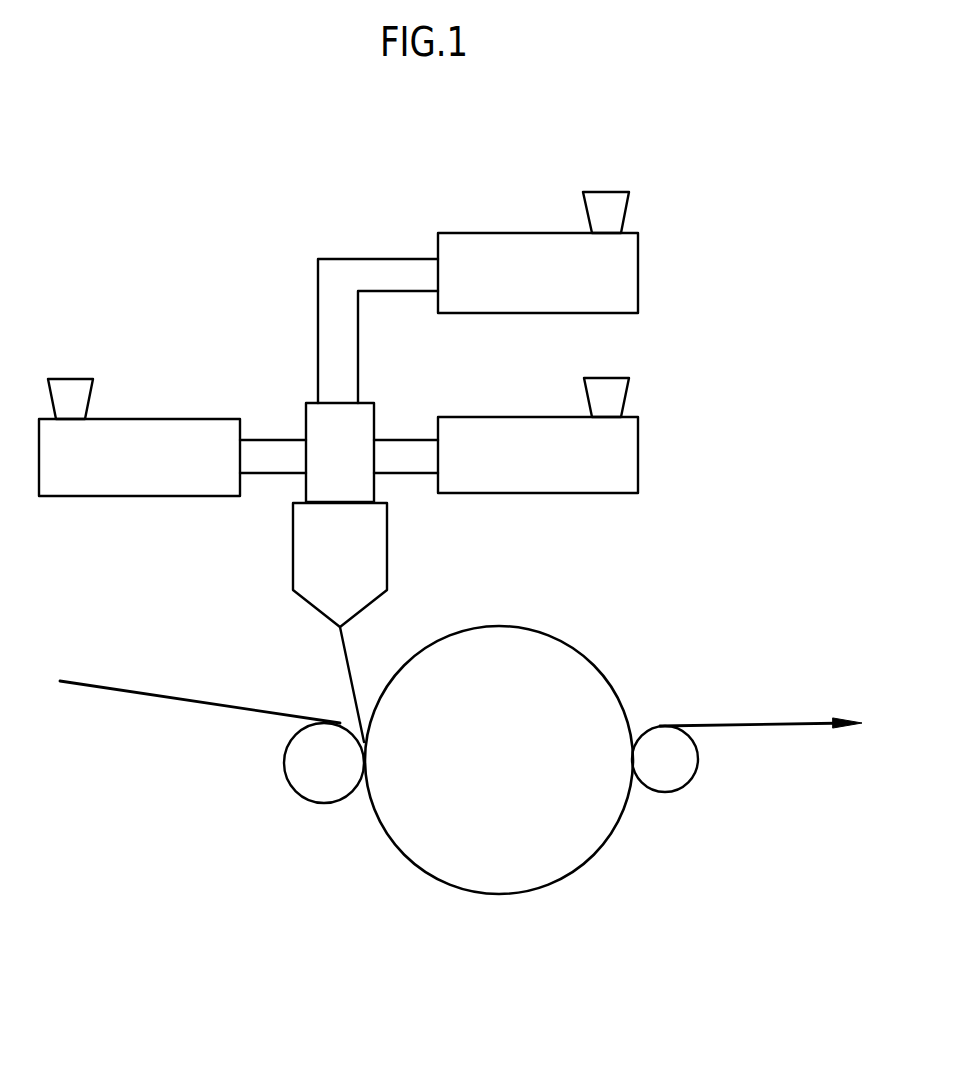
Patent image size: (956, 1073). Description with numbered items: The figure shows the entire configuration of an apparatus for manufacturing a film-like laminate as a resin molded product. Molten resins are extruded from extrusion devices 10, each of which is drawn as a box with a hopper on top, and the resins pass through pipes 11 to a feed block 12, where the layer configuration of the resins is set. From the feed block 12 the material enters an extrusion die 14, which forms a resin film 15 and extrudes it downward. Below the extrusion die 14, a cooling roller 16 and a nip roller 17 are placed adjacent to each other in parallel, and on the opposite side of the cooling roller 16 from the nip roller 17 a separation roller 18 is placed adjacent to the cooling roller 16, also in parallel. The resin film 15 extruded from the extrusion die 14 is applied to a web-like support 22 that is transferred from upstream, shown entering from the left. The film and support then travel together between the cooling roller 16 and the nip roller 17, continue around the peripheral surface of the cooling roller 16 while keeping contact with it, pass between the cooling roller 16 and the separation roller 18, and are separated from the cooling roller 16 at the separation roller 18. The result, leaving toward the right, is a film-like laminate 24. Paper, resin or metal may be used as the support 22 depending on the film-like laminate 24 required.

The extrusion device 10 is at (586, 305).
The pipe 11 is at (336, 273).
The feed block 12 is at (315, 425).
The extrusion die 14 is at (372, 568).
The resin film 15 is at (343, 672).
The cooling roller 16 is at (547, 657).
The nip roller 17 is at (318, 788).
The separation roller 18 is at (675, 772).
The web-like support 22 is at (168, 695).
The film-like laminate 24 is at (748, 723).